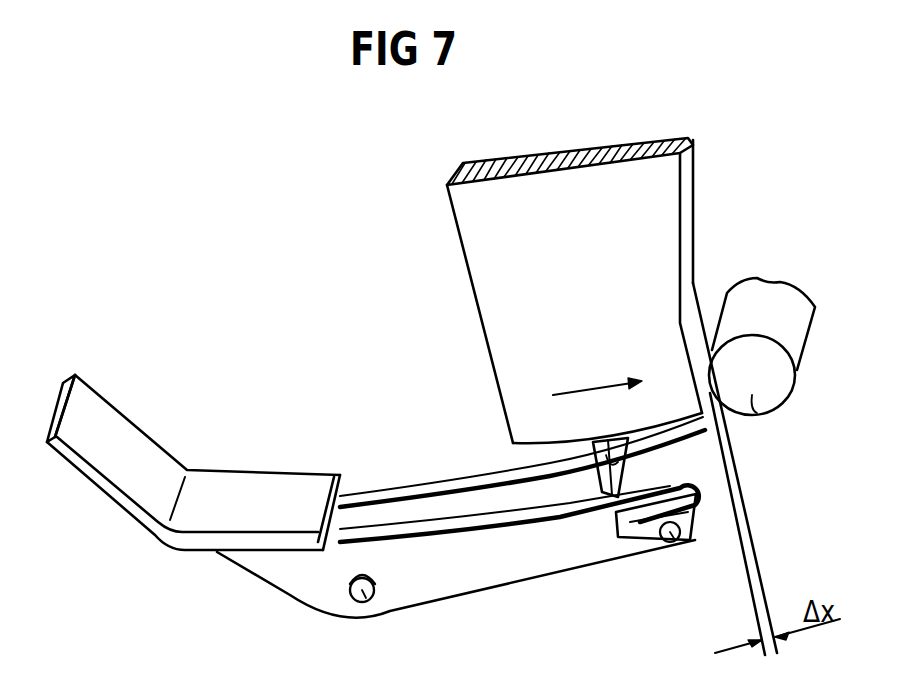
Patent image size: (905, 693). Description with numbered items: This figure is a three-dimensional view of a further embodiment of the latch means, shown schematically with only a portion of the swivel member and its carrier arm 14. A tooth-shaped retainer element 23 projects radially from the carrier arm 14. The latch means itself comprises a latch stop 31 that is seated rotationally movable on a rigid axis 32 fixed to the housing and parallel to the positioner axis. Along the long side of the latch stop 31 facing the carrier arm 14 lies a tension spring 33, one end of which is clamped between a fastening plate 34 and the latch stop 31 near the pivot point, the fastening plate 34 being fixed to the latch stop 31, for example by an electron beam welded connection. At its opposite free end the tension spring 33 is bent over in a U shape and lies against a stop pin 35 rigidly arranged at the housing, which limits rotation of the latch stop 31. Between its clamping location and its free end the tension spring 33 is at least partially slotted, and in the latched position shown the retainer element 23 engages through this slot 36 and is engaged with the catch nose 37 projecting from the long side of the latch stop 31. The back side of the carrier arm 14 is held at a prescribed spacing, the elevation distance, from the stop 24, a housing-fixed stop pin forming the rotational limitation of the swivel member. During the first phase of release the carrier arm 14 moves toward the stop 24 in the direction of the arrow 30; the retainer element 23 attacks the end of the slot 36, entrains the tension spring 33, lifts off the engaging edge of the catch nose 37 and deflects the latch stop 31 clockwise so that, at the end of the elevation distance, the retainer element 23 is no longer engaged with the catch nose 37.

The carrier arm 14 is at (485, 243).
The retainer element 23 is at (632, 456).
The stop 24 is at (758, 417).
The arrow 30 is at (584, 390).
The latch stop 31 is at (288, 570).
The rigid axis 32 is at (367, 602).
The tension spring 33 is at (550, 533).
The fastening plate 34 is at (140, 517).
The stop pin 35 is at (683, 547).
The slot 36 is at (500, 472).
The catch nose 37 is at (600, 530).